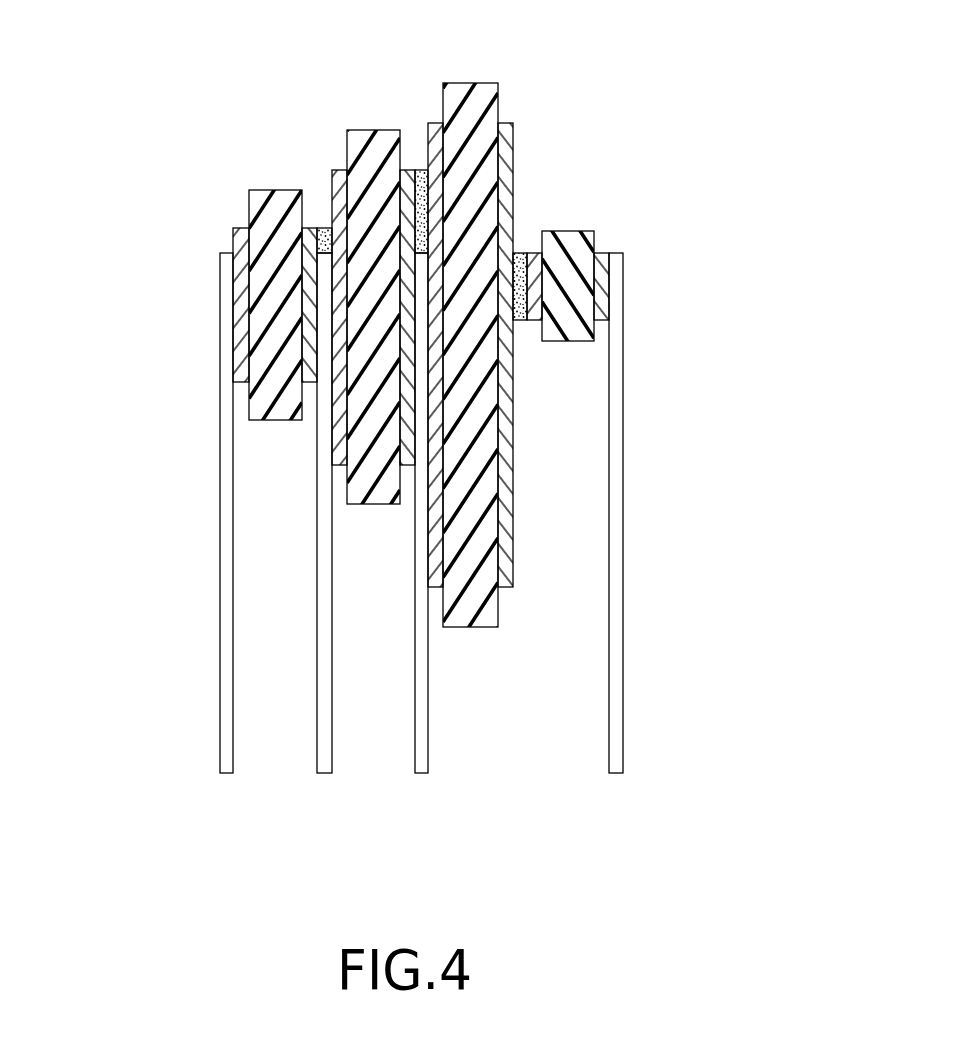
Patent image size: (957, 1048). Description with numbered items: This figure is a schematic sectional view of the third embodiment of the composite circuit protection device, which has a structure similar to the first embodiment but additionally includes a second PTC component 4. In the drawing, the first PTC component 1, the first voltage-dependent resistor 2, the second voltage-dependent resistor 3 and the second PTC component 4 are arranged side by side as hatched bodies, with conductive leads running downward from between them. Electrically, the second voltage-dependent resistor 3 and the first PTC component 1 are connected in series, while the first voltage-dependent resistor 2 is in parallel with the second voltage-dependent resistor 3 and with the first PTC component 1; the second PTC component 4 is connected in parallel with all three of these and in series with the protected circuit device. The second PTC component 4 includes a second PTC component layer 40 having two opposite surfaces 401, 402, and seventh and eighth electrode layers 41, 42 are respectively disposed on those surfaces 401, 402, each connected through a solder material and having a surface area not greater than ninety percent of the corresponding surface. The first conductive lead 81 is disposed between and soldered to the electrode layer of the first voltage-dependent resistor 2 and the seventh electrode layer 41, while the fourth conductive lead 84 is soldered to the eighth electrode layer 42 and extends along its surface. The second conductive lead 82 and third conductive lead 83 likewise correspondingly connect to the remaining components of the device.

The first positive temperature coefficient (PTC) component 1 is at (598, 223).
The first voltage-dependent resistor 2 is at (335, 127).
The second voltage-dependent resistor 3 is at (508, 80).
The second PTC component 4 is at (229, 300).
The second PTC component layer 40 is at (275, 300).
The seventh electrode layer 41 is at (311, 238).
The eighth electrode layer 42 is at (243, 240).
The surface of the second PTC component layer 401 is at (305, 355).
The surface of the second PTC component layer 402 is at (250, 342).
The first conductive lead 81 is at (322, 765).
The second conductive lead 82 is at (420, 765).
The third conductive lead 83 is at (612, 765).
The fourth conductive lead 84 is at (224, 765).